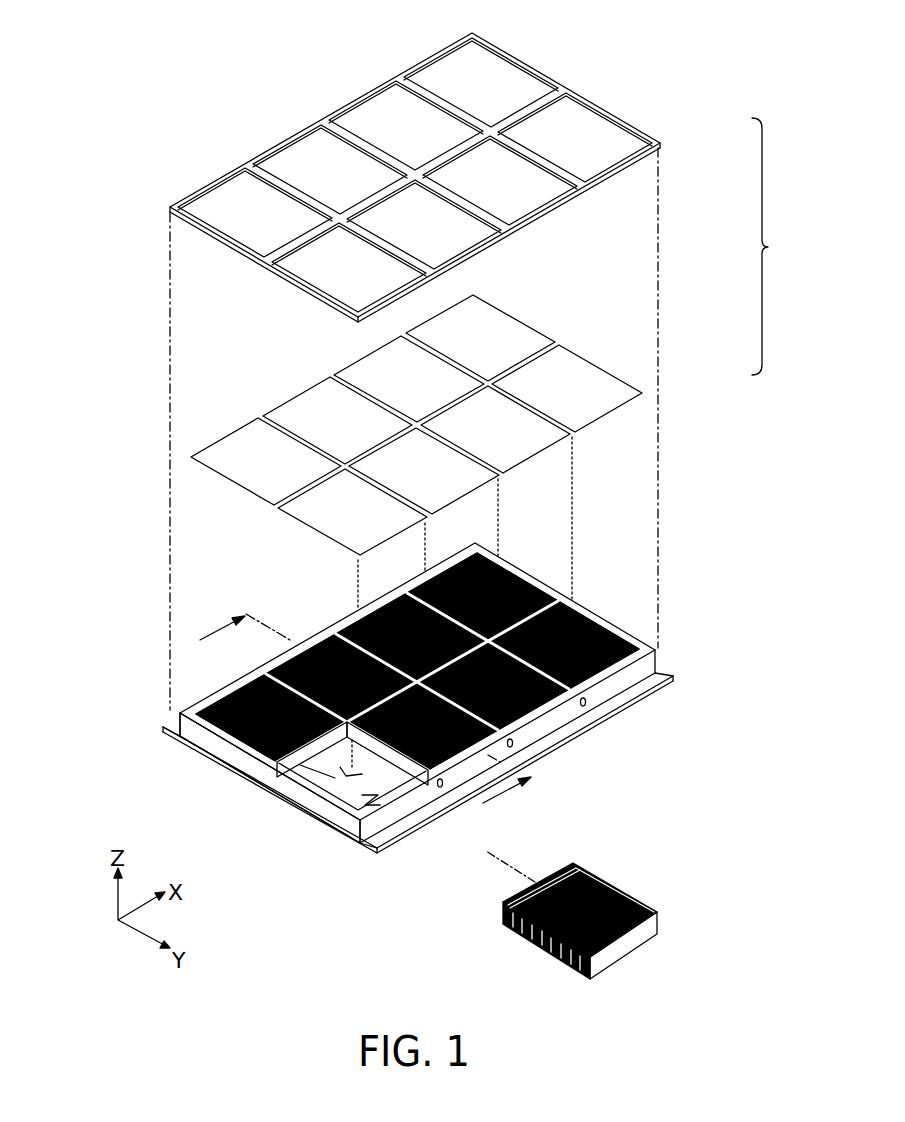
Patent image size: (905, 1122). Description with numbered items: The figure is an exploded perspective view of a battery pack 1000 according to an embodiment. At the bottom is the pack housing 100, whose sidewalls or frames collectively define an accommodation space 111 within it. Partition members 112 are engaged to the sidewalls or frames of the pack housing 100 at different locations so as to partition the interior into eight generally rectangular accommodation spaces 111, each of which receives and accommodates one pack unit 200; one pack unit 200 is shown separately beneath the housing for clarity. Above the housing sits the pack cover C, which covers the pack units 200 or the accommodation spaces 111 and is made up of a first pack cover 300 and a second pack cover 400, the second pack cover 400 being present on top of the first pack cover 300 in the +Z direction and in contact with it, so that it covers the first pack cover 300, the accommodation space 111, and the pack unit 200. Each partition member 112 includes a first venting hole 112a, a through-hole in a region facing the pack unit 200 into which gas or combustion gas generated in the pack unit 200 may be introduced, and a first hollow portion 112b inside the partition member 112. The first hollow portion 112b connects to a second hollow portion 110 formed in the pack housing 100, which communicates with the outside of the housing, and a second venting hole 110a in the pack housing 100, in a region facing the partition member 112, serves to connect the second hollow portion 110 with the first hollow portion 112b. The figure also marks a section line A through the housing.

The battery pack 1000 is at (186, 49).
The second pack cover 400 is at (660, 134).
The first pack cover 300 is at (646, 392).
The pack cover C is at (768, 246).
The pack housing 100 is at (662, 652).
The pack unit 200 is at (418, 573).
The second hollow portion 110 is at (333, 828).
The second venting hole 110a is at (440, 790).
The accommodation space 111 is at (375, 805).
The partition member 112 is at (275, 768).
The first venting hole 112a is at (338, 817).
The first hollow portion 112b is at (318, 780).
The section line A is at (358, 718).